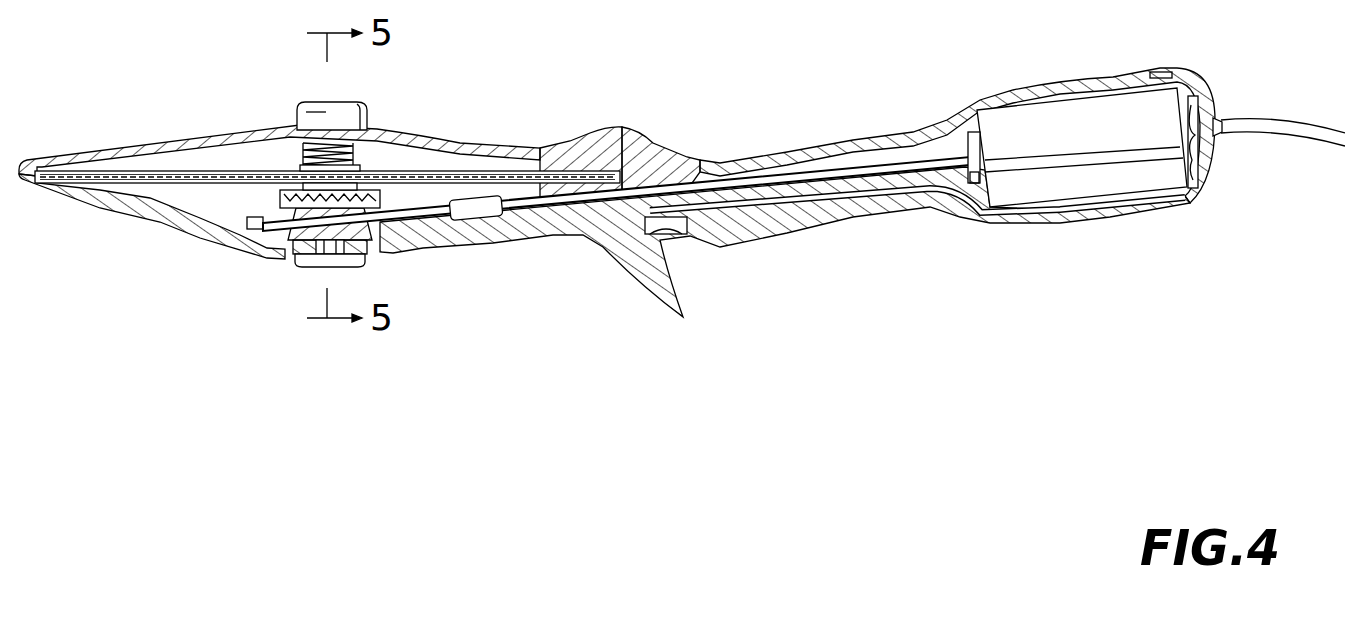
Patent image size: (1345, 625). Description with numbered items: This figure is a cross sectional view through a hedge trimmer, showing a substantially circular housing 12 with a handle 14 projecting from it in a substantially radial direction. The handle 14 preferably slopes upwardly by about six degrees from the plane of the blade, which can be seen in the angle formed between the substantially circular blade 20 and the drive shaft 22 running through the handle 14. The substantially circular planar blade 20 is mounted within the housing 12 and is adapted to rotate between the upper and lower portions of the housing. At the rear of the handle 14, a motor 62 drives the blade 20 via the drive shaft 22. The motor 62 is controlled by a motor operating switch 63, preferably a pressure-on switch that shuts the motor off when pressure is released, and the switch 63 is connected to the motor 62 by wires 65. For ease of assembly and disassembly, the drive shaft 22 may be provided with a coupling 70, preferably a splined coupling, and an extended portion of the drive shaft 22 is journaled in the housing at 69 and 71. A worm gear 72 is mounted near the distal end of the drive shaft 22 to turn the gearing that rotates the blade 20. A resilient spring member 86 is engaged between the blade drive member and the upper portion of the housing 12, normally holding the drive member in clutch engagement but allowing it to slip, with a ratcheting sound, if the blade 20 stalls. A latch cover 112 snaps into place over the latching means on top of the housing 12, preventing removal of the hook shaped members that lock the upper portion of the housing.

The substantially circular housing 12 is at (106, 146).
The handle 14 is at (860, 133).
The substantially circular blade 20 is at (213, 171).
The drive shaft 22 is at (595, 193).
The motor 62 is at (1057, 127).
The motor operating switch 63 is at (663, 237).
The wires 65 is at (850, 197).
The journal location 69 is at (257, 217).
The coupling 70 is at (517, 217).
The journal location 71 is at (410, 200).
The worm gear 72 is at (303, 262).
The resilient spring member 86 is at (357, 157).
The latch cover 112 is at (352, 101).